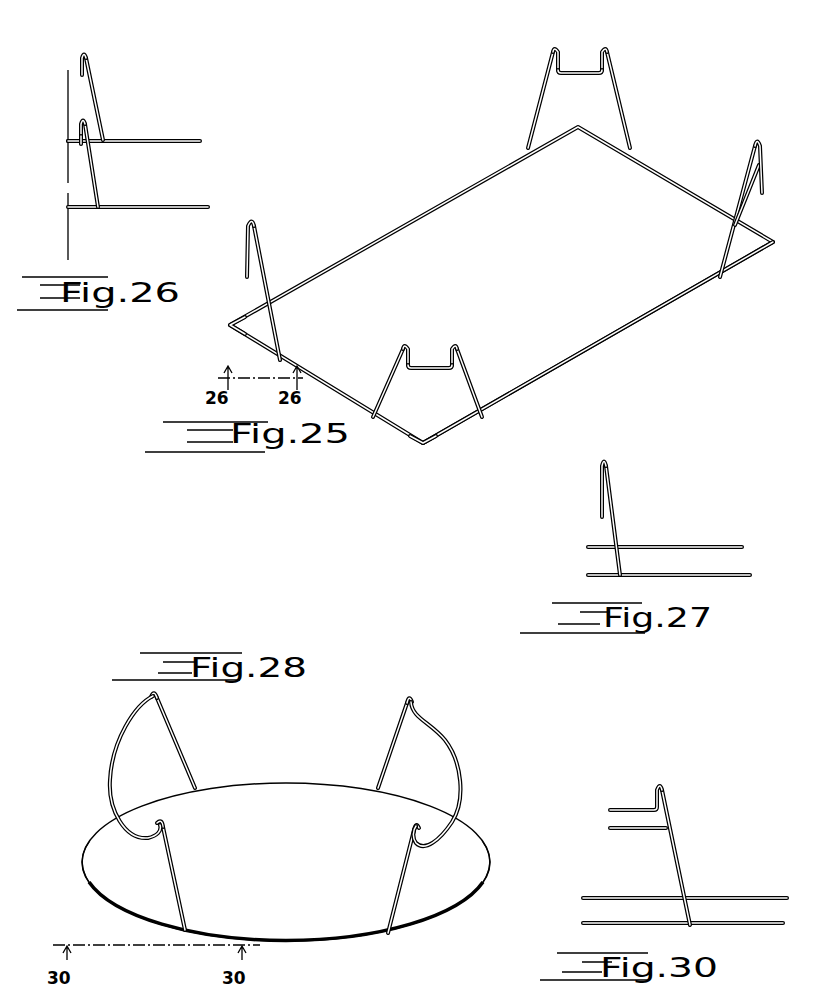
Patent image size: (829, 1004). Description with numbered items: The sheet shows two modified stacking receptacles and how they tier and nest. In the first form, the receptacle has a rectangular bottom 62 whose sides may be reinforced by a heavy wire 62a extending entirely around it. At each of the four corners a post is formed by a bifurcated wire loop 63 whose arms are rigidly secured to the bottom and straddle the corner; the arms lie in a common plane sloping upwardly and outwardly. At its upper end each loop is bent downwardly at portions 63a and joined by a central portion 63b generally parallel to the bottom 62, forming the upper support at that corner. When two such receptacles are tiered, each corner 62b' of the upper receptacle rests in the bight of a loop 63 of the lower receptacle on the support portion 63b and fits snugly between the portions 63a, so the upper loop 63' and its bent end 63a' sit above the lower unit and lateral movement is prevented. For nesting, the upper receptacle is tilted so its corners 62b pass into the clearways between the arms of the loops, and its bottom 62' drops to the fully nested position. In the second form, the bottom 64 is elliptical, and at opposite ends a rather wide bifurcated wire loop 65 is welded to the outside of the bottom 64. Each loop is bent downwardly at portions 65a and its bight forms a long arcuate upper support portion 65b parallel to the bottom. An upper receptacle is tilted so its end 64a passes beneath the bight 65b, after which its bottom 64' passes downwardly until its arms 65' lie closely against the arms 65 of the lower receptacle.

In FIG. 25, the rectangular bottom 62 is at (501, 285).
In FIG. 26, the rectangular bottom 62 is at (138, 195).
In FIG. 27, the rectangular bottom 62 is at (669, 562).
In FIG. 26, the bottom of upper receptacle 62' is at (134, 125).
In FIG. 27, the bottom of upper receptacle 62' is at (665, 533).
In FIG. 25, the heavy wire 62a is at (592, 361).
In FIG. 25, the corners of the bottom 62b is at (317, 396).
In FIG. 26, the corner of upper receptacle 62b' is at (50, 133).
In FIG. 25, the bifurcated wire loop 63 is at (506, 234).
In FIG. 26, the bifurcated wire loop 63 is at (105, 165).
In FIG. 27, the bifurcated wire loop 63 is at (591, 520).
In FIG. 26, the bifurcated wire loop of upper receptacle 63' is at (109, 99).
In FIG. 27, the bifurcated wire loop of upper receptacle 63' is at (624, 486).
In FIG. 25, the downwardly bent portions 63a is at (504, 202).
In FIG. 26, the downwardly bent portions 63a is at (54, 122).
In FIG. 26, the downwardly bent portion of upper receptacle 63a' is at (54, 66).
In FIG. 25, the central portion 63b is at (578, 77).
In FIG. 26, the central portion 63b is at (80, 146).
In FIG. 28, the bottom 64 is at (286, 862).
In FIG. 30, the bottom 64 is at (685, 937).
In FIG. 30, the bottom of upper receptacle 64' is at (685, 885).
In FIG. 28, the end of the bottom 64a is at (82, 857).
In FIG. 28, the bifurcated wire loop 65 is at (300, 815).
In FIG. 30, the bifurcated wire loop 65 is at (650, 857).
In FIG. 30, the bifurcated arms of upper receptacle 65' is at (659, 815).
In FIG. 28, the downwardly bent portions 65a is at (412, 704).
In FIG. 28, the upper support portion 65b is at (110, 778).